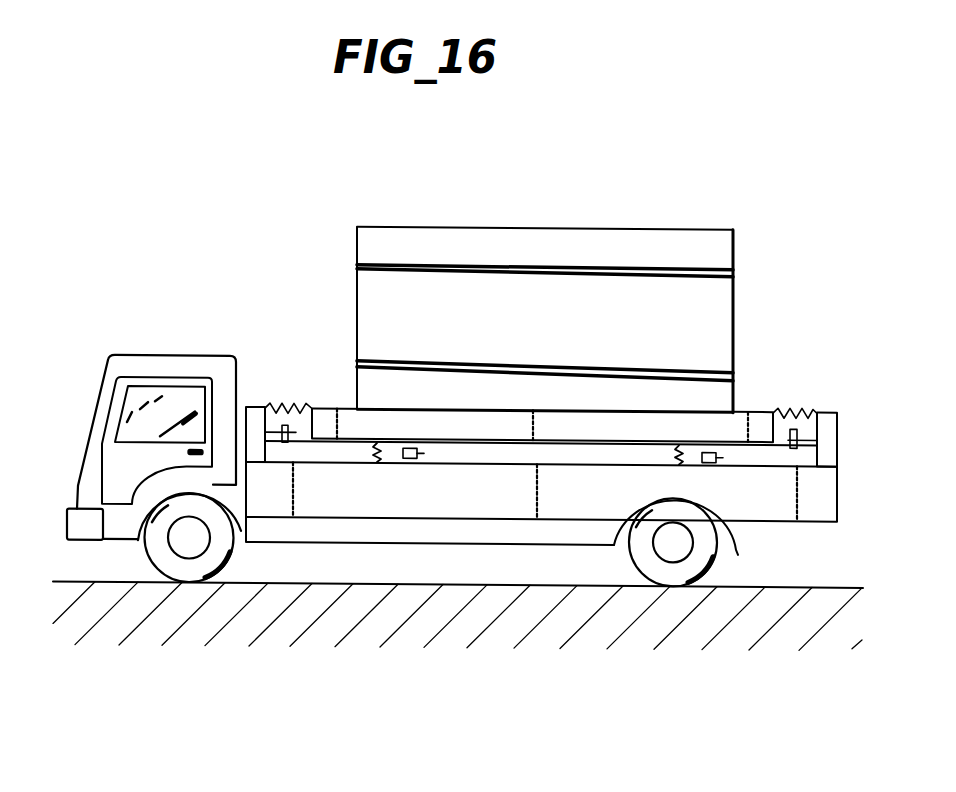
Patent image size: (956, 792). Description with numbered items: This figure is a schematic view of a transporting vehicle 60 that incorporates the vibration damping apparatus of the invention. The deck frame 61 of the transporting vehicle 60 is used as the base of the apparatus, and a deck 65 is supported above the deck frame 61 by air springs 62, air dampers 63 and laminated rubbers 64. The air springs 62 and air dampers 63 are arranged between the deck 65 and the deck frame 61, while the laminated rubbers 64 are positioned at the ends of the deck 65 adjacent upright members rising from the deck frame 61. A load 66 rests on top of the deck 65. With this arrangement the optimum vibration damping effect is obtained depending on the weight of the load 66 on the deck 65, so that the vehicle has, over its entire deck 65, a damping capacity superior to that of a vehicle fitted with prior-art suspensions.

The transporting vehicle 60 is at (206, 356).
The deck frame 61 is at (508, 503).
The air spring 62 is at (377, 448).
The air damper 63 is at (423, 458).
The laminated rubber 64 is at (297, 407).
The deck 65 is at (760, 410).
The load 66 is at (553, 326).